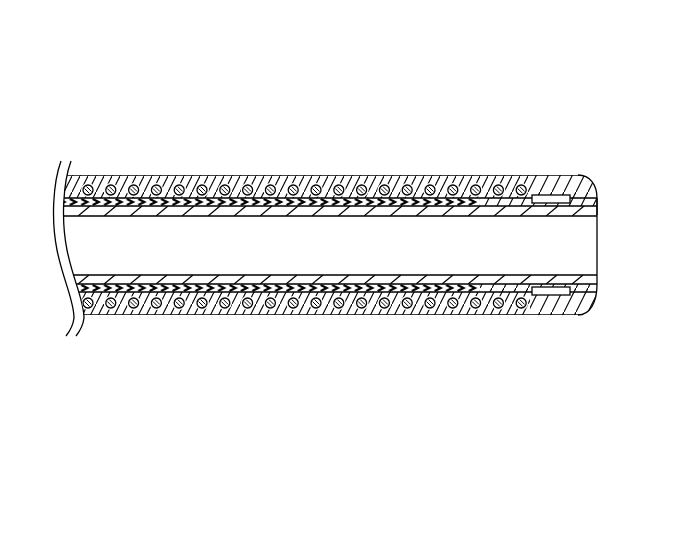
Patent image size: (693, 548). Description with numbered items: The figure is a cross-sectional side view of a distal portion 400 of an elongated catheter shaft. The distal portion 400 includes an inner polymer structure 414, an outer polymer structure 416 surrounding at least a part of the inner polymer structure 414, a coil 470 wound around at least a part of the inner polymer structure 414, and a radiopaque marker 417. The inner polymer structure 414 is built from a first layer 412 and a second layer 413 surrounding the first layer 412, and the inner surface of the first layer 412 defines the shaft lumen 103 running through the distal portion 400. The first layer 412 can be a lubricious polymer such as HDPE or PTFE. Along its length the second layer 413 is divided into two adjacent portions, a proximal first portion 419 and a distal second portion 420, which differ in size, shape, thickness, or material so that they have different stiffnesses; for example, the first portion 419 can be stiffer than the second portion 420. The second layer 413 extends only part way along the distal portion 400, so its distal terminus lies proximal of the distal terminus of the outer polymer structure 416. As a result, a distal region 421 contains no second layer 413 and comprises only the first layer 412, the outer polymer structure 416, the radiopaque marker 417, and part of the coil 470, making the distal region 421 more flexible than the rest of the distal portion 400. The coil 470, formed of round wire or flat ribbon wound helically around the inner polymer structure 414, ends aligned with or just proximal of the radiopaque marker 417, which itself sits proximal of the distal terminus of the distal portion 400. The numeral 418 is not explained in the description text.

The distal portion 400 is at (100, 104).
The first portion 419 is at (217, 177).
The second layer 413 is at (330, 185).
The second portion 420 is at (463, 185).
The distal region 421 is at (600, 97).
The radiopaque marker 417 is at (553, 195).
The inner polymer structure 414 is at (599, 197).
The distal tip 418 is at (600, 251).
The first layer 412 is at (487, 207).
The lumen 103 is at (313, 257).
The outer polymer structure 416 is at (171, 318).
The coil 470 is at (449, 303).